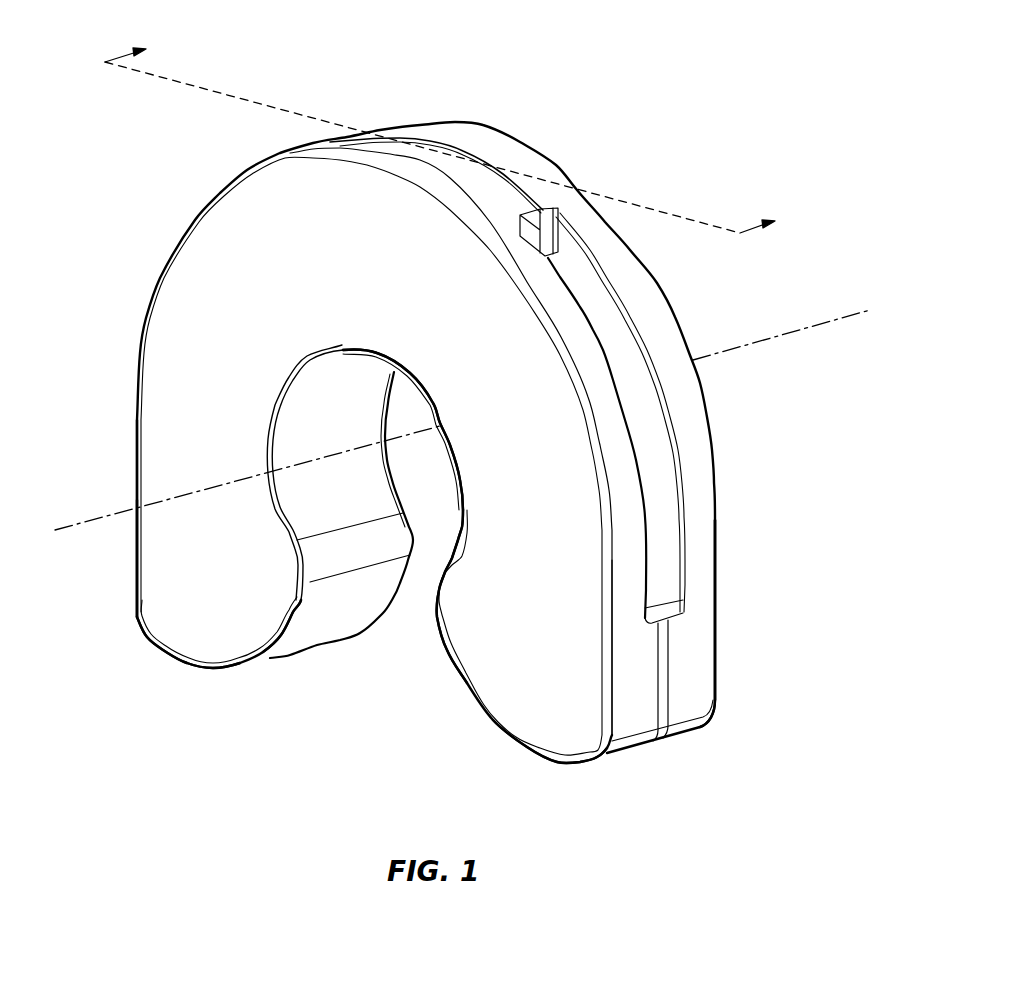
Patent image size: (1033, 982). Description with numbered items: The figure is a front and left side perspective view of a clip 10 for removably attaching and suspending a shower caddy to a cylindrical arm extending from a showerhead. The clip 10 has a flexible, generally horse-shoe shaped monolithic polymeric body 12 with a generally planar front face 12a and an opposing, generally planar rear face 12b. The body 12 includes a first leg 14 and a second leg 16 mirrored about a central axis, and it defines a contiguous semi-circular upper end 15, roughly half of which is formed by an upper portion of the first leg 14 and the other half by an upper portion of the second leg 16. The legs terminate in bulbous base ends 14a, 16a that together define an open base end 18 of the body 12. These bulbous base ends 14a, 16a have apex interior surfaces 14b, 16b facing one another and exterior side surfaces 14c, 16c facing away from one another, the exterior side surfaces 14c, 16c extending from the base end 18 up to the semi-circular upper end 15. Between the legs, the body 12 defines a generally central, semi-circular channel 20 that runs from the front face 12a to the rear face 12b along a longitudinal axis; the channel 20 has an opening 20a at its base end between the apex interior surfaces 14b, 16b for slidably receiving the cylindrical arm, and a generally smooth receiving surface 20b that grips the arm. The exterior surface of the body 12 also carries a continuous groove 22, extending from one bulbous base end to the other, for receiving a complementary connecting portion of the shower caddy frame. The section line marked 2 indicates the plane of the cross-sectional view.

The clip 10 is at (150, 160).
The body 12 is at (130, 410).
The front face 12a is at (209, 252).
The rear face 12b is at (668, 310).
The first leg 14 is at (183, 470).
The bulbous base end 14a is at (188, 635).
The apex interior surface 14b is at (318, 630).
The exterior side surface 14c is at (137, 590).
The semi-circular upper end 15 is at (475, 143).
The second leg 16 is at (553, 600).
The bulbous base end 16a is at (520, 724).
The apex interior surface 16b is at (433, 633).
The exterior side surface 16c is at (717, 698).
The open base end 18 is at (355, 693).
The channel 20 is at (400, 397).
The opening 20a is at (420, 583).
The receiving surface 20b is at (322, 411).
The groove 22 is at (587, 277).
The section line 2- 2 is at (457, 135).